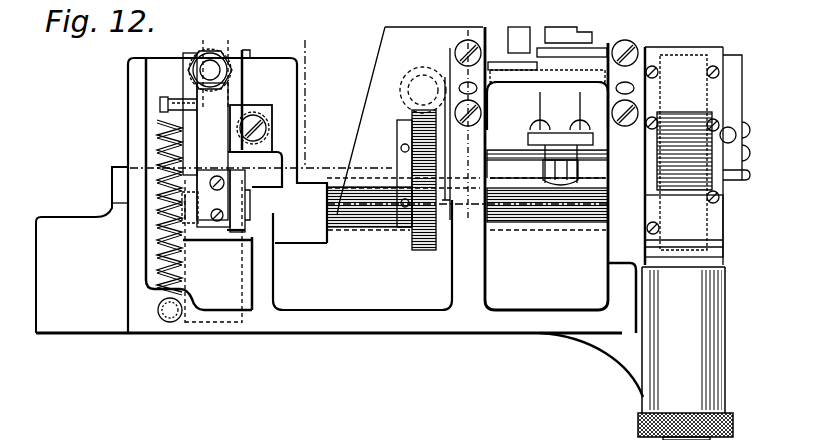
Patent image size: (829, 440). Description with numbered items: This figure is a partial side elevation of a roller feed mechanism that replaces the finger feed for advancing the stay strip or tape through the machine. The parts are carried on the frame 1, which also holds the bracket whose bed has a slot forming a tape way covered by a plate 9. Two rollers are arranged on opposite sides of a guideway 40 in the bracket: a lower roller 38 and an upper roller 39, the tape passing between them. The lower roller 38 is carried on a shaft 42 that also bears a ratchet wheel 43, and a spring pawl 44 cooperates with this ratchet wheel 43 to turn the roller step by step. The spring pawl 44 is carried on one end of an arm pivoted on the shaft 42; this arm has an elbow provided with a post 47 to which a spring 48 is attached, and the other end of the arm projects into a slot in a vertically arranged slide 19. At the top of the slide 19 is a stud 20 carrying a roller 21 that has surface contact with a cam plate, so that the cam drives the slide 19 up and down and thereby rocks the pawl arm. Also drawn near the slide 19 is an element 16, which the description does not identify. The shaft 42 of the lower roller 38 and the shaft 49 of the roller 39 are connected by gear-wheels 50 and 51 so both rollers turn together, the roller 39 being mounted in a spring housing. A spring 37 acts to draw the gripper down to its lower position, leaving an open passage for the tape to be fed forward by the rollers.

The frame 1 is at (434, 325).
The plate 9 is at (720, 58).
The slide block 16 is at (234, 151).
The slide 19 is at (184, 54).
The stud 20 is at (212, 62).
The roller 21 is at (244, 62).
The spring 37 is at (738, 181).
The lower roller 38 is at (690, 190).
The roller 39 is at (682, 173).
The guideway 40 is at (682, 85).
The shaft 42 is at (362, 210).
The ratchet wheel 43 is at (236, 230).
The spring pawl 44 is at (268, 199).
The post 47 is at (160, 104).
The spring 48 is at (157, 244).
The shaft 49 is at (497, 148).
The gear-wheel 50 is at (426, 250).
The gear-wheel 51 is at (412, 121).